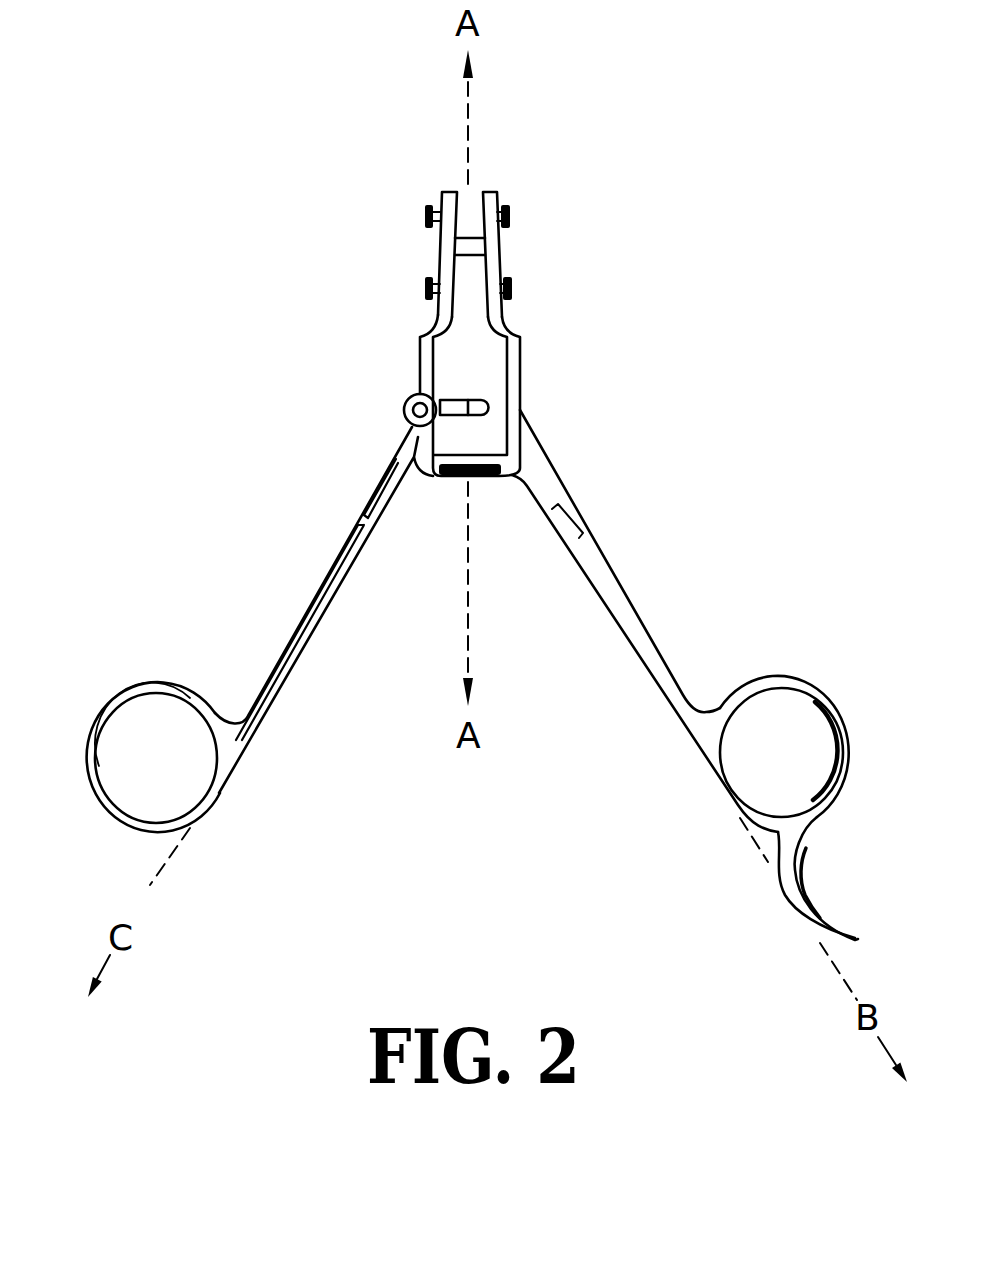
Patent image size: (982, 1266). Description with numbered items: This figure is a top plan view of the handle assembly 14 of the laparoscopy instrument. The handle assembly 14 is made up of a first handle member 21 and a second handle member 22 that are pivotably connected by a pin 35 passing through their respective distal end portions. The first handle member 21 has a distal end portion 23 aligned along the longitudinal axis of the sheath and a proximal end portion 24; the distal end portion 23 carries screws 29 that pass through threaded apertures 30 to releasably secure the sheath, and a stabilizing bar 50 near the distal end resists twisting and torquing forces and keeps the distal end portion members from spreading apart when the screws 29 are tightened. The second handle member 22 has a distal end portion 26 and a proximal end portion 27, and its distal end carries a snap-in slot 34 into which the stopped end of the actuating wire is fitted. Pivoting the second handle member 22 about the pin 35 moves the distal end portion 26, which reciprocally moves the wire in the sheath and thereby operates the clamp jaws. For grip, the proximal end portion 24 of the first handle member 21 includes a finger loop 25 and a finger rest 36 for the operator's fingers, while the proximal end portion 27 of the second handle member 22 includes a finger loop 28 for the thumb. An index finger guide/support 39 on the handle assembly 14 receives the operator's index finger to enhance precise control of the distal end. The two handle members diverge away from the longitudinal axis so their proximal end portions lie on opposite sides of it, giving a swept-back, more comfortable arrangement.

The handle assembly 14 is at (466, 217).
The threaded apertures 30 is at (492, 210).
The screws 29 is at (510, 210).
The stabilizing bar 50 is at (481, 244).
The distal end portion 23 is at (512, 350).
The snap-in slot 34 is at (467, 403).
The distal end portion 26 is at (485, 413).
The pin 35 is at (414, 404).
The second handle member 22 is at (324, 610).
The first handle member 21 is at (645, 621).
The index finger guide/support 39 is at (487, 480).
The proximal end portion 24 is at (630, 627).
The finger loop 25 is at (808, 692).
The proximal end portion 27 is at (300, 648).
The finger loop 28 is at (125, 700).
The finger rest 36 is at (792, 888).